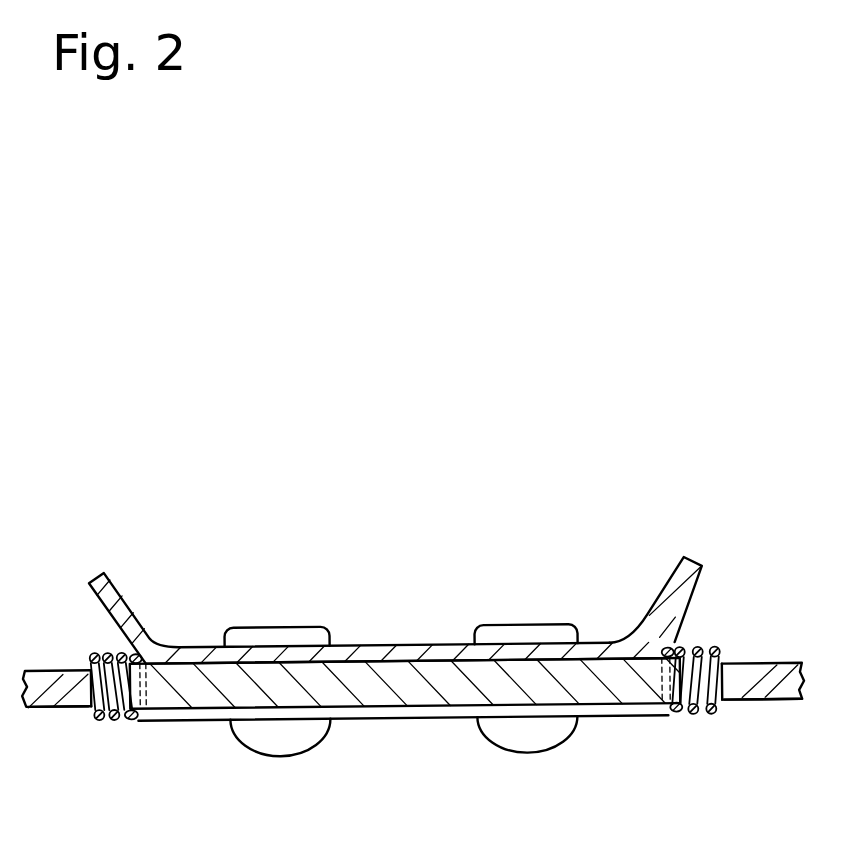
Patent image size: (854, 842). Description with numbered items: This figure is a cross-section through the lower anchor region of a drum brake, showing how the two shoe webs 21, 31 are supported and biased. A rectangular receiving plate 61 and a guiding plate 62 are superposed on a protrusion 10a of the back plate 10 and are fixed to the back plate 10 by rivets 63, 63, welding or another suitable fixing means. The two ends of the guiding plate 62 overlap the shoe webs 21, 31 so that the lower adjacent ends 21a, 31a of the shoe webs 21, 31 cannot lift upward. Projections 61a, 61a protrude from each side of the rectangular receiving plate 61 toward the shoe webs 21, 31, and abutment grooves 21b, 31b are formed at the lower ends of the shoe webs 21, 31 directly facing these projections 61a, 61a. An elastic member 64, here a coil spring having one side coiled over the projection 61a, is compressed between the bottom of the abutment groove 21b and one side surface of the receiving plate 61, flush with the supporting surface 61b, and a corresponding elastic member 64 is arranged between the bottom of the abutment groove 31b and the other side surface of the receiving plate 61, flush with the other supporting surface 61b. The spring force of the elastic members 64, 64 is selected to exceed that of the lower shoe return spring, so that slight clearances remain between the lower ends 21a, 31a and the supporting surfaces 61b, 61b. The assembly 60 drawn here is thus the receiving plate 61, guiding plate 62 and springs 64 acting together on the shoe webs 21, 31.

The back plate 10 is at (118, 576).
The protrusion of back plate 10a is at (597, 645).
The shoe web 21 is at (45, 667).
The lower adjacent end of shoe web 21a is at (48, 703).
The abutment groove 21b is at (108, 717).
The shoe web 31 is at (771, 666).
The lower adjacent end of shoe web 31a is at (752, 703).
The abutment groove 31b is at (708, 717).
The circuit substrate 60 is at (453, 734).
The rectangular receiving plate 61 is at (425, 670).
The projection 61a is at (666, 651).
The supporting surface 61b is at (147, 655).
The guiding plate 62 is at (362, 712).
The rivet 63 is at (297, 625).
The elastic member 64 is at (110, 652).